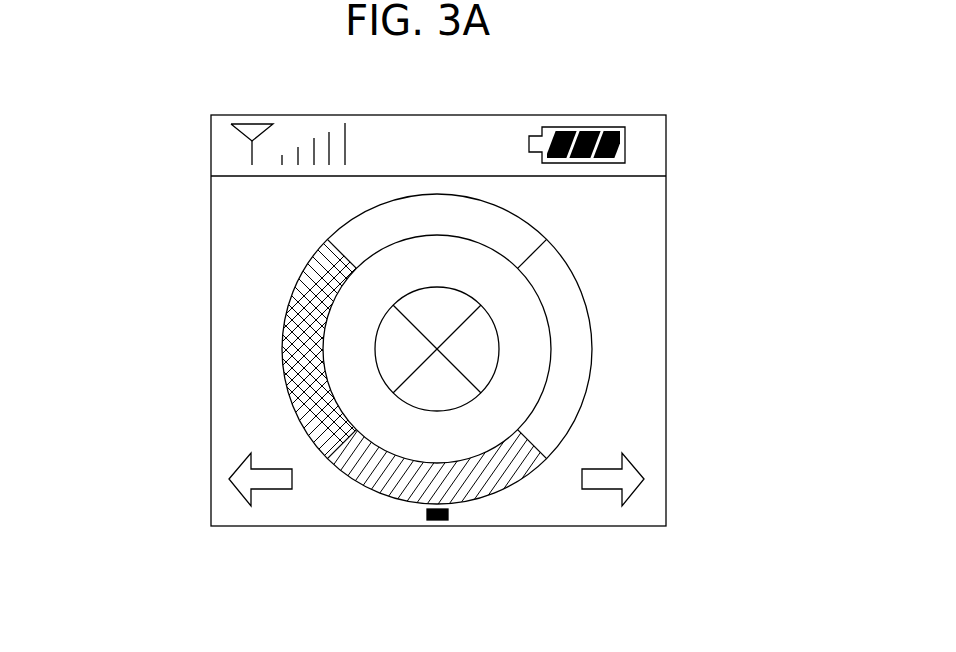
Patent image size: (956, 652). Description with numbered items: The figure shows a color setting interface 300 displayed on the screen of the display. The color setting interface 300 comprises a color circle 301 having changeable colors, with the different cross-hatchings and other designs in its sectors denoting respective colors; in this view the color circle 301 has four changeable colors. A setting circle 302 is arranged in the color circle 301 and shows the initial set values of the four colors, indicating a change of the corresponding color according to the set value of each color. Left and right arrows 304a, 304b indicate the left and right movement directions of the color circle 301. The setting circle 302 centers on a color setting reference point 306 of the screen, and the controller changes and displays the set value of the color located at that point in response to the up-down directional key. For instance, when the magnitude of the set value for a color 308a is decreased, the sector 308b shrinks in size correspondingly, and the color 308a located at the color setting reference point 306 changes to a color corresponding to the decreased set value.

The color setting interface 300 is at (704, 363).
The color circle 301 is at (282, 357).
The setting circle 302 is at (382, 322).
The left arrow 304a is at (277, 482).
The right arrow 304b is at (607, 481).
The color setting reference point 306 is at (434, 522).
The color 308a is at (366, 468).
The sector 308b is at (457, 396).